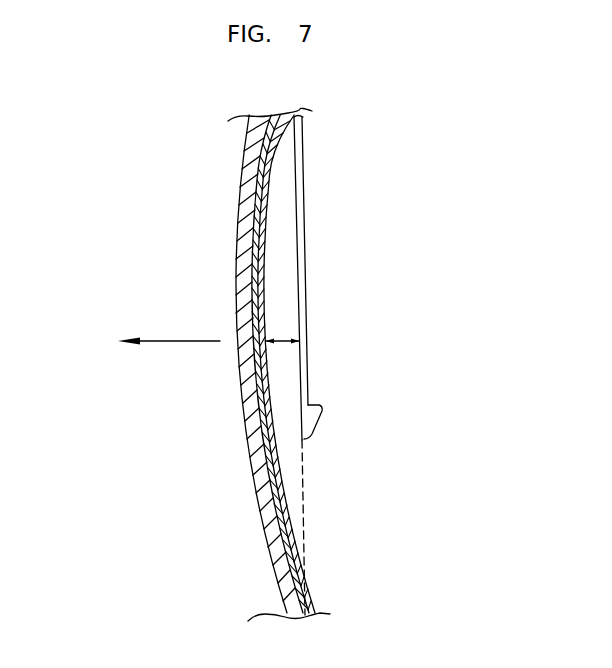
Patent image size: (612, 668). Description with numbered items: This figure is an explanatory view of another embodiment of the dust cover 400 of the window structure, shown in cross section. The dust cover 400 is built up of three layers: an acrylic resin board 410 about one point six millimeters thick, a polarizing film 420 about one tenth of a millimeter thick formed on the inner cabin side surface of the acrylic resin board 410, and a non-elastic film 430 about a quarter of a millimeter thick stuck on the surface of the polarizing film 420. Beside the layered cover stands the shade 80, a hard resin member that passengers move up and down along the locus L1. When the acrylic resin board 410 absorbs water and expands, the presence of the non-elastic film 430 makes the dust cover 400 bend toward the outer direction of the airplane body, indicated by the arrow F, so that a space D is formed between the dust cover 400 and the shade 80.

The dust cover 400 is at (222, 364).
The acrylic resin board 410 is at (240, 279).
The polarizing film 420 is at (272, 497).
The non-elastic film 430 is at (263, 266).
The shade 80 is at (308, 382).
The locus L1 is at (308, 500).
The space D is at (282, 327).
The arrow F is at (156, 344).